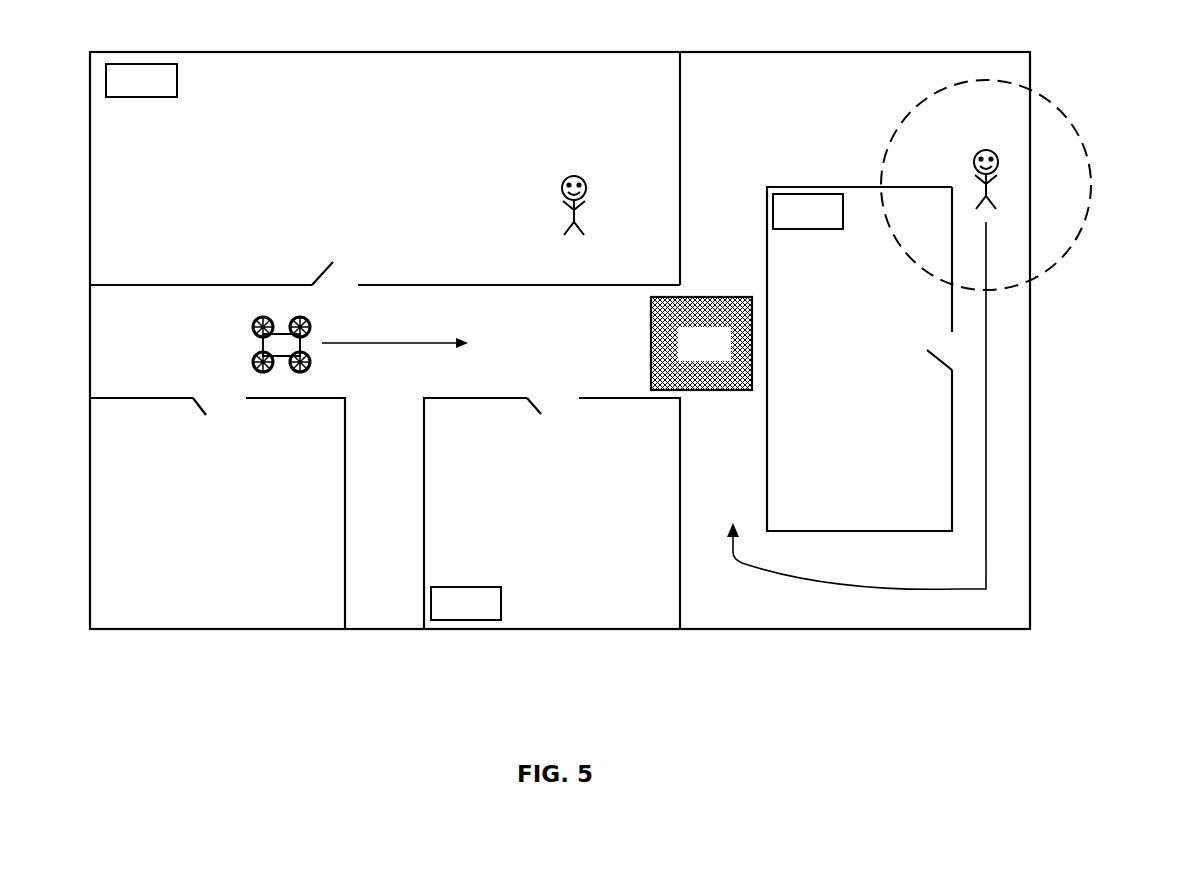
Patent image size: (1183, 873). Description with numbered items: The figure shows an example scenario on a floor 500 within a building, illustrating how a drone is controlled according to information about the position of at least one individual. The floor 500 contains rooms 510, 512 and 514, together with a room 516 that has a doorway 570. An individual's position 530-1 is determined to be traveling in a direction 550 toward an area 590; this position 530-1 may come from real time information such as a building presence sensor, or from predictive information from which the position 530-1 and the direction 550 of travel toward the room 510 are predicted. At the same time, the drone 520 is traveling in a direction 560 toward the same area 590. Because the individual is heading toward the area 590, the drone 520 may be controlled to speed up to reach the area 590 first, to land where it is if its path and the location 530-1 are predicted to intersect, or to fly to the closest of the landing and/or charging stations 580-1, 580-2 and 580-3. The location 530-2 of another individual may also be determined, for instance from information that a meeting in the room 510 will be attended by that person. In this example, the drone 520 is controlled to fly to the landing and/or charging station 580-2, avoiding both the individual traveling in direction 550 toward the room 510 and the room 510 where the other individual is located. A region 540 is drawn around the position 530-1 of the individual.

The floor 500 is at (90, 341).
The room 510 is at (385, 168).
The room 512 is at (217, 513).
The room 514 is at (552, 513).
The room 516 is at (859, 359).
The drone 520 is at (253, 341).
The individual's position 530-1 is at (962, 179).
The location of another individual 530-2 is at (560, 191).
The zone around user 540 is at (1093, 186).
The direction of travel 550 is at (874, 405).
The direction 560 is at (395, 357).
The doorway 570 is at (933, 348).
The landing and/or charging station 580-1 is at (141, 80).
The landing and/or charging station 580-2 is at (466, 603).
The landing and/or charging station 580-3 is at (808, 211).
The area 590 is at (701, 343).